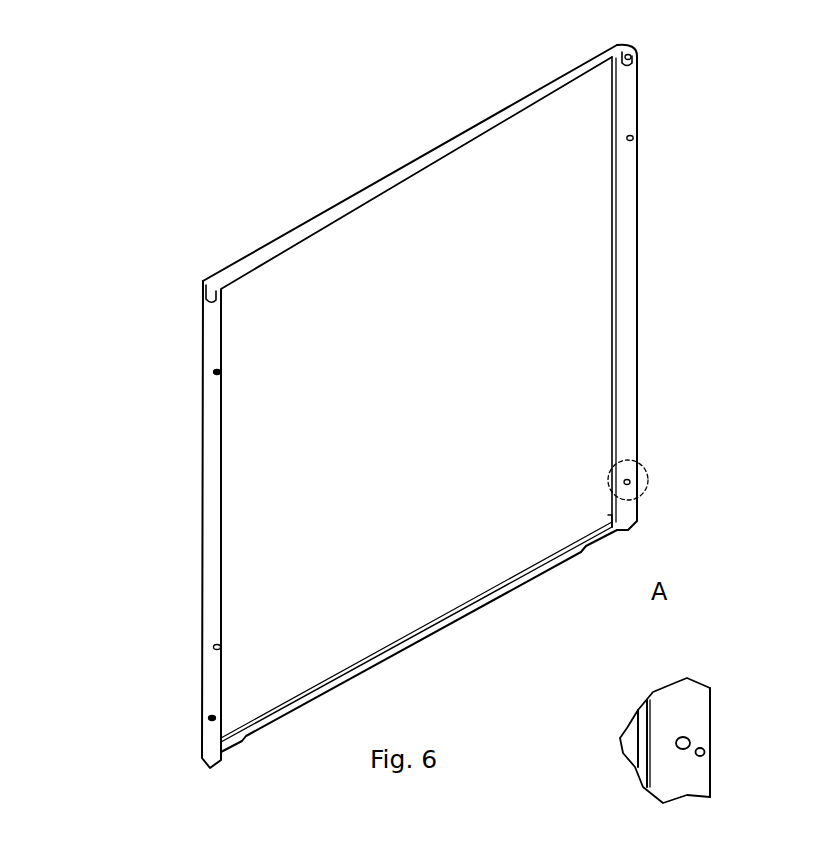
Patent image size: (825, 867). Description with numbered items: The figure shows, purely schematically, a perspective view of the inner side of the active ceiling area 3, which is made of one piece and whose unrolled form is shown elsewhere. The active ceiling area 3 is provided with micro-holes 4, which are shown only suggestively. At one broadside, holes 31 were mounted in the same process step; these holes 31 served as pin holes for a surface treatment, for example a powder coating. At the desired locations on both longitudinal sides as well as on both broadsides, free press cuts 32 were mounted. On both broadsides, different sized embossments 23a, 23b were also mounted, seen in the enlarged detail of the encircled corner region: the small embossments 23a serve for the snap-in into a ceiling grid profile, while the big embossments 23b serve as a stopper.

The active ceiling area 3 is at (412, 419).
The micro-holes 4 is at (593, 509).
The holes 31 is at (213, 404).
The free press cuts 32 is at (243, 759).
The small embossments 23a is at (705, 748).
The big embossments 23b is at (687, 737).